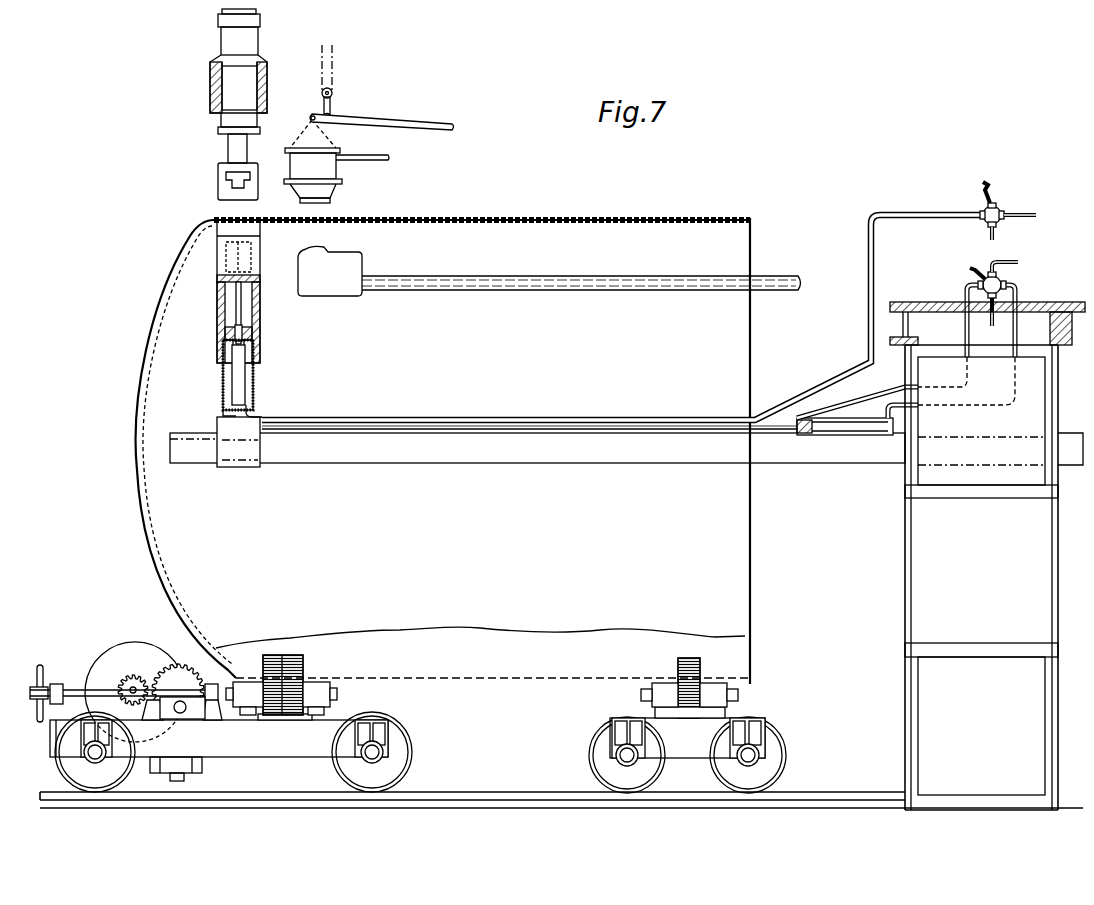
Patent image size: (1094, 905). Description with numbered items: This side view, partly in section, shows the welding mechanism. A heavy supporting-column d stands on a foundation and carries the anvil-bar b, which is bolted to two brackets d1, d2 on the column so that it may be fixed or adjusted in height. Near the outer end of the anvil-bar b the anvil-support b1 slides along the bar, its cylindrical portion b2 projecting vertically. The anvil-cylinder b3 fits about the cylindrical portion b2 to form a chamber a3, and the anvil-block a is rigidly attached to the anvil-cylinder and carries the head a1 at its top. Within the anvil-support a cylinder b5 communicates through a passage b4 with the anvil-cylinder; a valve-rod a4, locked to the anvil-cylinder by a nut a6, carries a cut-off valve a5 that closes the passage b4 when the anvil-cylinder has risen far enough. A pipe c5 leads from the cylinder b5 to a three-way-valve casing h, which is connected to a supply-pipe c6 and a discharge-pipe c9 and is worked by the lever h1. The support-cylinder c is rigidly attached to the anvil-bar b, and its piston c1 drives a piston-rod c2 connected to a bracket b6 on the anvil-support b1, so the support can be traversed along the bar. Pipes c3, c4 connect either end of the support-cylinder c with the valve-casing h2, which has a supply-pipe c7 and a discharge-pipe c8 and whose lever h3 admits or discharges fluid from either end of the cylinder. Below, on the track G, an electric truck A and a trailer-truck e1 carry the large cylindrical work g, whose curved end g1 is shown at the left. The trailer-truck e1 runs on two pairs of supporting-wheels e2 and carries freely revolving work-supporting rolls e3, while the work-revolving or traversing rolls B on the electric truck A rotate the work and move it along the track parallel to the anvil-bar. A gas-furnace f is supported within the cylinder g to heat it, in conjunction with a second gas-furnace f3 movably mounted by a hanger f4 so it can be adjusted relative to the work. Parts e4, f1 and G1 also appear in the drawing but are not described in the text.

The anvil-block a is at (217, 258).
The head a1 is at (217, 236).
The chamber a3 is at (225, 290).
The valve-rod a4 is at (241, 300).
The cut-off valve a5 is at (254, 352).
The nut a6 is at (262, 274).
The anvil-bar b is at (607, 449).
The anvil-support b1 is at (236, 470).
The cylindrical portion b2 is at (253, 404).
The anvil-cylinder b3 is at (225, 330).
The passage b4 is at (244, 338).
The cylinder b5 is at (245, 378).
The bracket b6 is at (266, 419).
The support-cylinder c is at (857, 415).
The piston c1 is at (804, 434).
The piston-rod c2 is at (506, 426).
The pipe c3 is at (894, 386).
The pipe c4 is at (966, 347).
The pipe c5 is at (228, 420).
The supply-pipe c6 is at (1025, 229).
The supply-pipe c7 is at (1009, 257).
The discharge-pipe c8 is at (993, 322).
The discharge-pipe c9 is at (1002, 237).
The supporting-column d is at (987, 556).
The bracket d1 is at (1068, 432).
The bracket d2 is at (905, 489).
The trailer-truck e1 is at (687, 738).
The supporting-wheels e2 is at (687, 755).
The work-supporting rolls e3 is at (690, 688).
The motor bearing e4 is at (689, 693).
The gas-furnace f is at (330, 271).
The slide rod f1 is at (581, 294).
The gas-furnace f3 is at (328, 190).
The hanger f4 is at (330, 116).
The cylinder g is at (480, 646).
The curved end g1 is at (137, 450).
The three-way-valve casing h is at (1001, 210).
The lever h1 is at (984, 183).
The valve-casing h2 is at (1002, 283).
The lever h3 is at (971, 270).
The electric truck A is at (219, 750).
The rolls B is at (303, 662).
The track G is at (882, 798).
The carriage wheel G1 is at (70, 770).